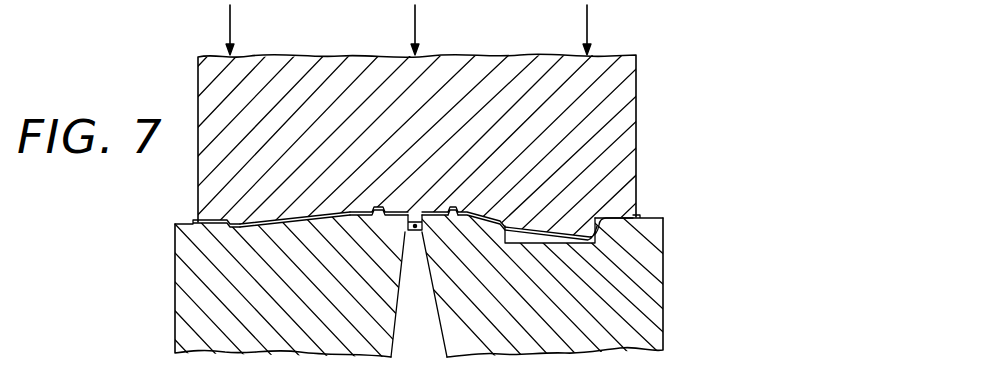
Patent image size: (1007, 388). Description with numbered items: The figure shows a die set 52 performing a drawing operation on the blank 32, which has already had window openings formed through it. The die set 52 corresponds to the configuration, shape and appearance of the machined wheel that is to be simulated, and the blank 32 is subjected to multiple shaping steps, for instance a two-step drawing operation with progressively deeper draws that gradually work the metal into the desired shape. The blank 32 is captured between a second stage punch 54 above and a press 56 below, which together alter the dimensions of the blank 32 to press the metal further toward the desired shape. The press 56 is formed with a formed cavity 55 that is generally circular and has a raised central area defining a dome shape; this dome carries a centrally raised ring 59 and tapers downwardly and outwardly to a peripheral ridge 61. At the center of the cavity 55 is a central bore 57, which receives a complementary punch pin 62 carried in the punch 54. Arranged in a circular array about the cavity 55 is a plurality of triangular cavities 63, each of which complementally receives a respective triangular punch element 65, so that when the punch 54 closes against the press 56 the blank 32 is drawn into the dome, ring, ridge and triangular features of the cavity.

The blank 32 is at (275, 212).
The die set 52 is at (663, 197).
The second stage punch 54 is at (636, 92).
The formed cavity 55 is at (349, 210).
The press 56 is at (663, 293).
The central bore 57 is at (417, 231).
The centrally raised ring 59 is at (455, 206).
The peripheral ridge 61 is at (205, 225).
The punch pin 62 is at (407, 222).
The triangular cavities 63 is at (553, 244).
The triangular punch elements 65 is at (663, 238).